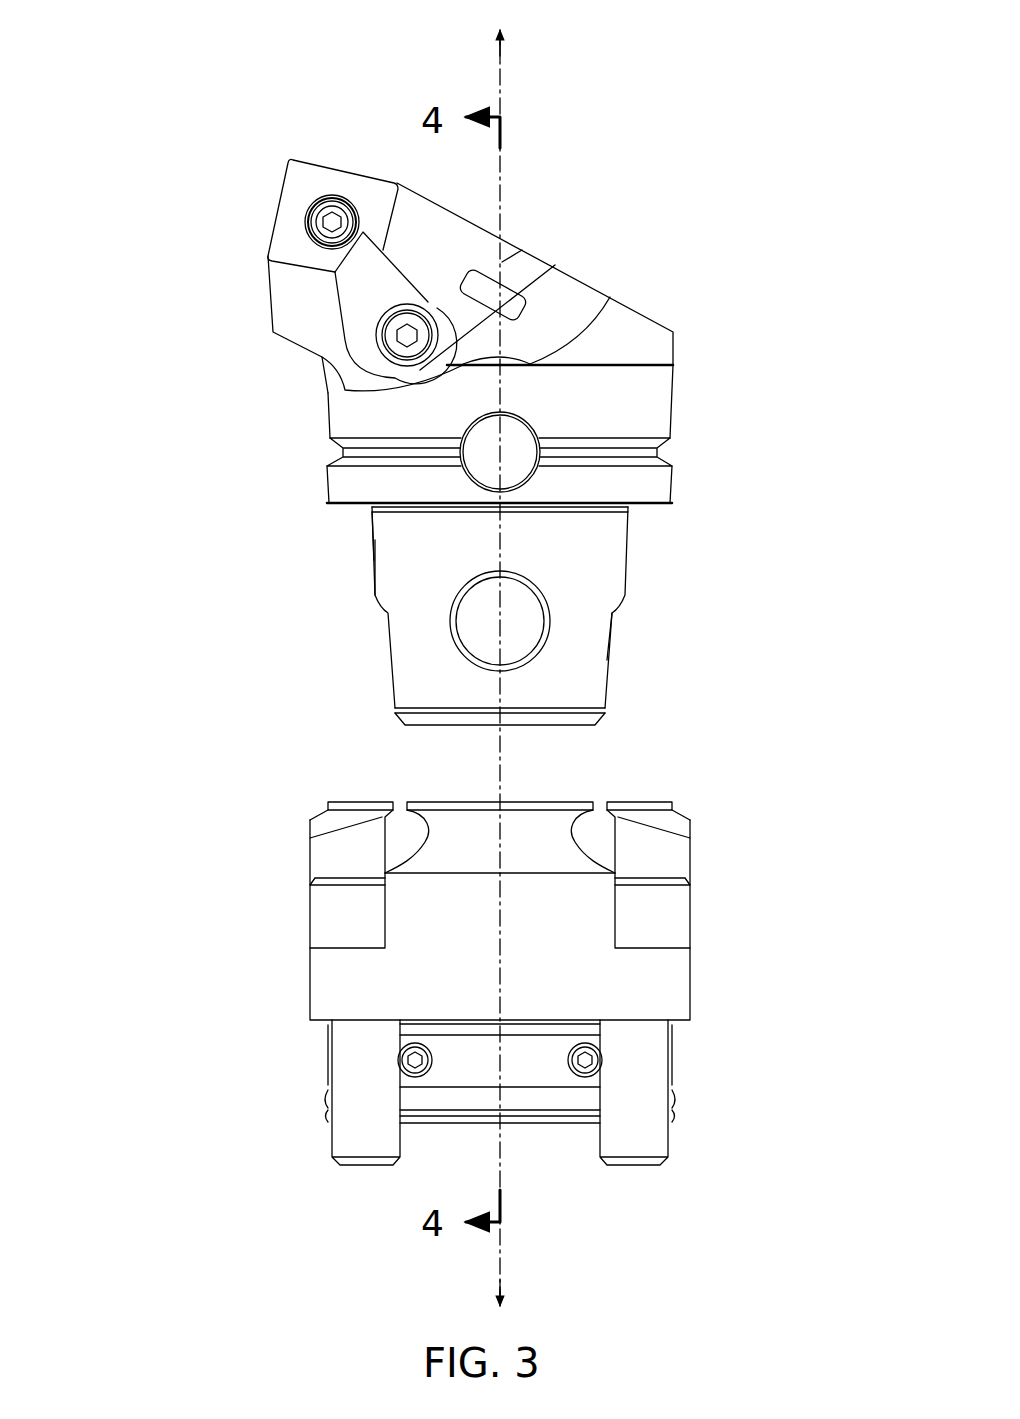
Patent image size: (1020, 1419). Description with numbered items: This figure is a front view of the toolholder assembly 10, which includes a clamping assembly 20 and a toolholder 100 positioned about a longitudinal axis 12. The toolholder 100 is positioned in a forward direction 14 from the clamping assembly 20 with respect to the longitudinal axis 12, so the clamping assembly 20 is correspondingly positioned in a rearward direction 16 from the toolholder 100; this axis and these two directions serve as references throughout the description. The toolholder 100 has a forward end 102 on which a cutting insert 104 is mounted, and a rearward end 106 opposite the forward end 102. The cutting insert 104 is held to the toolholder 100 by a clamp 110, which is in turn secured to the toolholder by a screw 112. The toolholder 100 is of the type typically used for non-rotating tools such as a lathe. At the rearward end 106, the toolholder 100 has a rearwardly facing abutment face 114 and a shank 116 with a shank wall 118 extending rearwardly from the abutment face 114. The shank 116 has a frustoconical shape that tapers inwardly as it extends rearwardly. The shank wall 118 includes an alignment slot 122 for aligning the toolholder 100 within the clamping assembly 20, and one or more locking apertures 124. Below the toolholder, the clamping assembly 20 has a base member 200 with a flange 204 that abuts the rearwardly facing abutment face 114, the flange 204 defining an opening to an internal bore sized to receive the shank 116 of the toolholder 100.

The toolholder assembly 10 is at (133, 102).
The longitudinal axis 12 is at (525, 100).
The forward direction 14 is at (507, 36).
The rearward direction 16 is at (507, 1300).
The clamping assembly 20 is at (590, 931).
The toolholder 100 is at (725, 278).
The forward end 102 is at (223, 192).
The cutting insert 104 is at (310, 173).
The rearward end 106 is at (350, 712).
The clamp 110 is at (360, 280).
The screw 112 is at (413, 333).
The rearwardly facing abutment face 114 is at (658, 511).
The shank 116 is at (277, 577).
The shank wall 118 is at (372, 558).
The alignment slot 122 is at (640, 637).
The locking apertures 124 is at (517, 610).
The base member 200 is at (693, 962).
The flange 204 is at (658, 800).